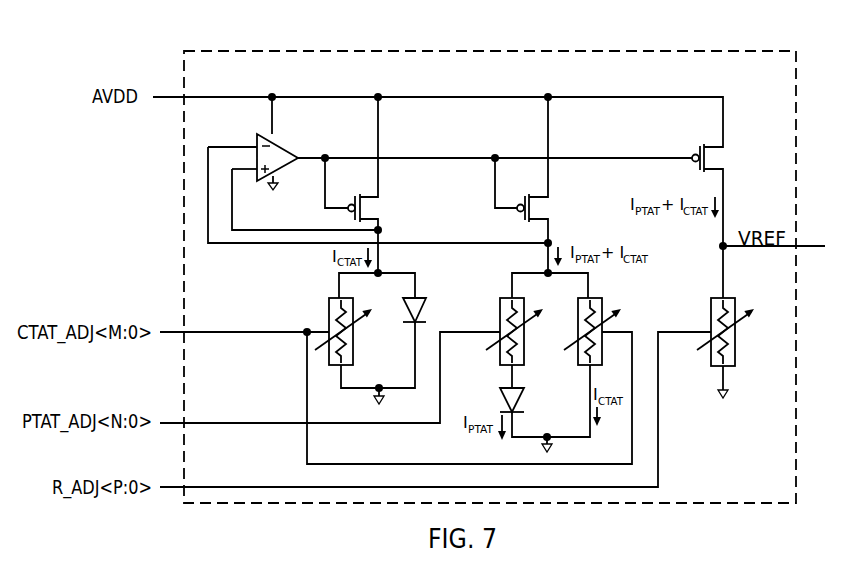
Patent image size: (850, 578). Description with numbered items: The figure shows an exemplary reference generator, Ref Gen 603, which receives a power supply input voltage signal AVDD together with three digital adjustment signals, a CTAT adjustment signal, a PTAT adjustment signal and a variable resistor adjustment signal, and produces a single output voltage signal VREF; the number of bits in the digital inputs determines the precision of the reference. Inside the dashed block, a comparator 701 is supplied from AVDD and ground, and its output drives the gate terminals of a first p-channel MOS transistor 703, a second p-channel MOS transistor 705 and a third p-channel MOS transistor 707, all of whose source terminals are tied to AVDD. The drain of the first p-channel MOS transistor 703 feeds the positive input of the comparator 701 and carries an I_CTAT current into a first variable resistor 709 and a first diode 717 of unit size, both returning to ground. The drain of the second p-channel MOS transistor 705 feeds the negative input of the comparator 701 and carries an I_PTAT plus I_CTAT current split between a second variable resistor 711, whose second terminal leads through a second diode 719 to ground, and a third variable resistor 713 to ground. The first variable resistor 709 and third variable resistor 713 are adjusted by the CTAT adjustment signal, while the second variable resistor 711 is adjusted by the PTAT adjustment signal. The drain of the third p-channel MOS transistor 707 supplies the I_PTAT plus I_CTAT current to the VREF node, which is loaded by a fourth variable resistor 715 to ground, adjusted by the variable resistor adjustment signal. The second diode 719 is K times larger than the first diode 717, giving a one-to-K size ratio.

The reference generator (Ref Gen) 603 is at (267, 13).
The comparator 701 is at (263, 118).
The first p-channel MOS transistor 703 is at (368, 178).
The second p-channel MOS transistor 705 is at (537, 175).
The third p-channel MOS transistor 707 is at (710, 128).
The first variable resistor 709 is at (329, 307).
The second variable resistor 711 is at (500, 307).
The third variable resistor 713 is at (578, 307).
The fourth variable resistor 715 is at (711, 308).
The first diode 717 is at (403, 307).
The second diode 719 is at (500, 401).